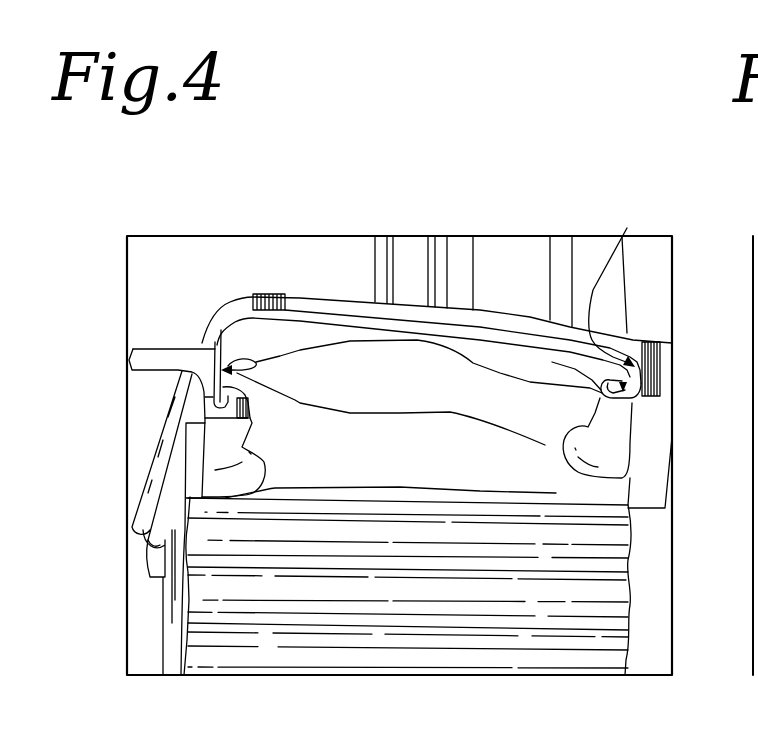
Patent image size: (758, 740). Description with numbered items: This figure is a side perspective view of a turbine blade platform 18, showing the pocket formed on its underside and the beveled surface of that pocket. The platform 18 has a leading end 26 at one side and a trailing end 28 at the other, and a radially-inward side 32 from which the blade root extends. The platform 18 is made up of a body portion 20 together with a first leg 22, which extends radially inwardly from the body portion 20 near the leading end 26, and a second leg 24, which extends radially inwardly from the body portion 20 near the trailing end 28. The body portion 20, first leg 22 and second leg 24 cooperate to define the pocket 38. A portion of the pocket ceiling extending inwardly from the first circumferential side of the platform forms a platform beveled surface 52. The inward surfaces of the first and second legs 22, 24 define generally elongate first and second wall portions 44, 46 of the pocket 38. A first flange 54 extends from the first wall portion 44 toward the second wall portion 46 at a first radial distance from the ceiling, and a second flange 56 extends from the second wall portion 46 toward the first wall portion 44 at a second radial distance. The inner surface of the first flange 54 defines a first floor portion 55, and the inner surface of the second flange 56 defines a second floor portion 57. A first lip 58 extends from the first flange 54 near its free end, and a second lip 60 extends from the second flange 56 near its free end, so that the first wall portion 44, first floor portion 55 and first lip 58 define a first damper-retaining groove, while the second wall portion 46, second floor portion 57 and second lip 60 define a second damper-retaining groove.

The platform 18 is at (258, 288).
The body portion 20 is at (488, 318).
The first leg 22 is at (208, 347).
The second leg 24 is at (660, 387).
The leading end 26 is at (200, 292).
The trailing end 28 is at (659, 314).
The radially-inward side 32 is at (372, 465).
The pocket 38 is at (485, 448).
The first wall portion 44 is at (132, 349).
The second wall portion 46 is at (627, 228).
The platform beveled surface 52 is at (365, 322).
The first flange 54 is at (218, 407).
The first floor portion 55 is at (203, 385).
The second flange 56 is at (632, 403).
The second floor portion 57 is at (601, 398).
The first lip 58 is at (213, 371).
The second lip 60 is at (540, 335).